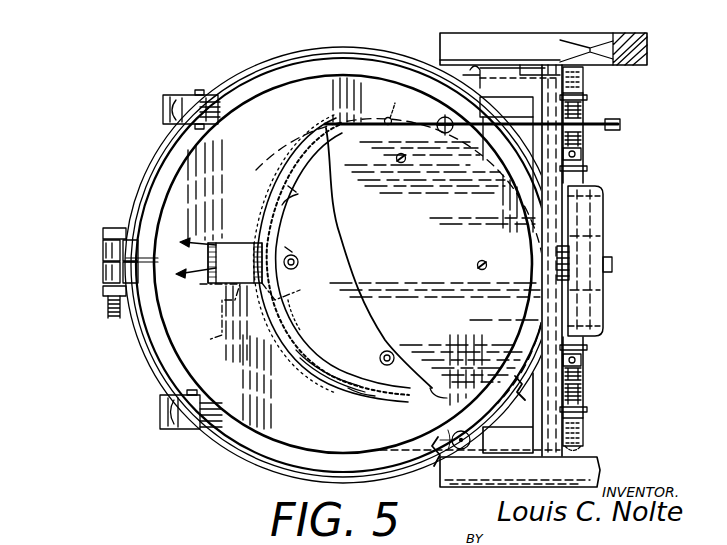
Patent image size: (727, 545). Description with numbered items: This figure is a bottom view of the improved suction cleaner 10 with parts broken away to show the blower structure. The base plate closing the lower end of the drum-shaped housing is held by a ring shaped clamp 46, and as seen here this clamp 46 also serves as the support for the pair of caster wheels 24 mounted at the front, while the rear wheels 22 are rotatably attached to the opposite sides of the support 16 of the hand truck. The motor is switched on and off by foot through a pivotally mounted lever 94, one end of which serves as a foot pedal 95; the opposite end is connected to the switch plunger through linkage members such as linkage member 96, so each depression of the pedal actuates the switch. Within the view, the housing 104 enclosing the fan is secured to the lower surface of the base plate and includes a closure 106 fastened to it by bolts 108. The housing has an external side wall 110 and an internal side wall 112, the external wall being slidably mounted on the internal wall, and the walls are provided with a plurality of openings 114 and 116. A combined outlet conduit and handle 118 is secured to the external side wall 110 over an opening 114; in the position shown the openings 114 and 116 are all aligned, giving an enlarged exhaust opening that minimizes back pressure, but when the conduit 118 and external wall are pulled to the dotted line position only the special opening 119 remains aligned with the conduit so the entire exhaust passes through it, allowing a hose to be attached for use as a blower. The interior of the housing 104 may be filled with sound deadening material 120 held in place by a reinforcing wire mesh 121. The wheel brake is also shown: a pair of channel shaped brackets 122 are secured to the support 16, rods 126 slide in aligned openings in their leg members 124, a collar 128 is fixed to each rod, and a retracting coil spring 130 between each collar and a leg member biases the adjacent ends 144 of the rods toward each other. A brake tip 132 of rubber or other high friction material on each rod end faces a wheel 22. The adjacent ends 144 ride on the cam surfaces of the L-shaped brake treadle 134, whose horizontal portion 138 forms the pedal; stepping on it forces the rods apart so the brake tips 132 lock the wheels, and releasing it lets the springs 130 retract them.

The suction cleaner 10 is at (113, 108).
The support 16 is at (507, 445).
The rear wheels 22 is at (497, 45).
The caster wheels 24 is at (215, 102).
The ring shaped clamp 46 is at (130, 196).
The pivotally mounted lever 94 is at (515, 124).
The foot pedal 95 is at (620, 127).
The linkage member 96 is at (383, 102).
The housing 104 is at (313, 382).
The closure 106 is at (410, 243).
The bolts 108 is at (405, 159).
The external side wall 110 is at (280, 208).
The internal side wall 112 is at (298, 224).
The openings 114 is at (283, 147).
The openings 116 is at (310, 336).
The combined outlet conduit and handle 118 is at (245, 296).
The special opening 119 is at (283, 312).
The sound deadening material 120 is at (352, 392).
The reinforcing wire mesh 121 is at (288, 186).
The brackets 122 is at (592, 176).
The leg members 124 is at (588, 97).
The rods 126 is at (583, 110).
The collar 128 is at (582, 152).
The retracting coil spring 130 is at (583, 137).
The brake tip 132 is at (584, 81).
The brake treadle 134 is at (608, 223).
The horizontal portion 138 is at (597, 237).
The adjacent ends 144 is at (587, 198).